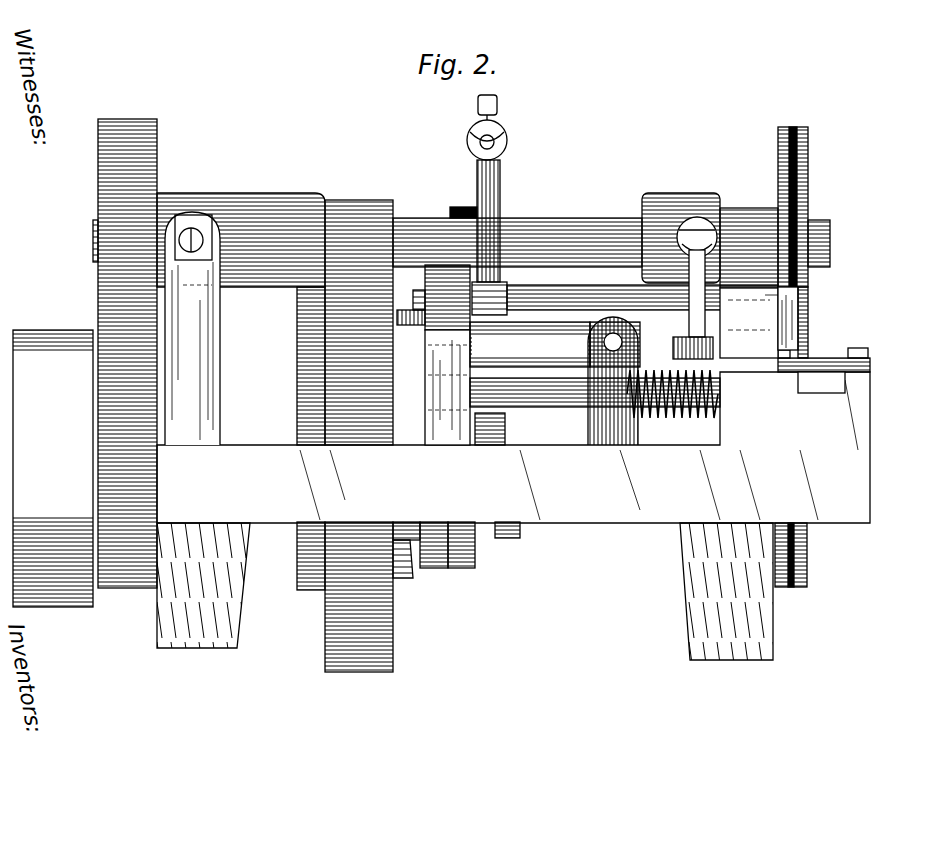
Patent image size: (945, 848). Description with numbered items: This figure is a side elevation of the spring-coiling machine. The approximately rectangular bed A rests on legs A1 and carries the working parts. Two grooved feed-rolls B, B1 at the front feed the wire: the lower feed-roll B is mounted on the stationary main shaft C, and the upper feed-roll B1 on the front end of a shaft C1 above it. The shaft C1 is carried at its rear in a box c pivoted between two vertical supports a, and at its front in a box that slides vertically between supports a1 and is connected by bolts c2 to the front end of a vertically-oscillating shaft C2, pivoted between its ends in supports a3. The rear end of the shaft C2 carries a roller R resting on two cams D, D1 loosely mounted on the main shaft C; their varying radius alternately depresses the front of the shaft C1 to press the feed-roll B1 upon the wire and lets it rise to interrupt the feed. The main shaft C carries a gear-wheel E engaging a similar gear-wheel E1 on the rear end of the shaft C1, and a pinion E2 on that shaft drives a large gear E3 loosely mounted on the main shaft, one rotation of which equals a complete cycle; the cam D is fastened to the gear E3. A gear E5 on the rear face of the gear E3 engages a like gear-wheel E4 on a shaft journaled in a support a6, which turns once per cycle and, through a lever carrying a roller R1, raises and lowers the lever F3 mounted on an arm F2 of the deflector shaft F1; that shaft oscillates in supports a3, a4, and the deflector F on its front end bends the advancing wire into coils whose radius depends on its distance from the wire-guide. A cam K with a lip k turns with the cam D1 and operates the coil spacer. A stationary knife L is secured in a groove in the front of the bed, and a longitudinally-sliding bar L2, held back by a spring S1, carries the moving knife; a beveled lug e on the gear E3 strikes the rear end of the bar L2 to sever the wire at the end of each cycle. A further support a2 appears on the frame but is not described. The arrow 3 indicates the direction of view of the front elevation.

The bed A is at (590, 508).
The legs A1 is at (240, 605).
The lower feed-roll B is at (807, 550).
The upper feed-roll B1 is at (808, 190).
The main shaft C is at (160, 458).
The rear box c is at (236, 210).
The upper feed-roll shaft C1 is at (700, 193).
The bolts c2 is at (695, 268).
The vertically-oscillating shaft C2 is at (594, 344).
The cam D is at (436, 568).
The adjustable cam D1 is at (462, 568).
The gear-wheel E is at (130, 590).
The gear-wheel E1 is at (118, 125).
The pinion E2 is at (360, 210).
The large gear E3 is at (365, 672).
The gear-wheel E4 is at (300, 325).
The gear E5 is at (310, 588).
The beveled lug e is at (402, 578).
The deflector F is at (808, 333).
The deflector shaft F1 is at (544, 290).
The arm F2 is at (500, 198).
The lever F3 is at (507, 136).
The cam K is at (500, 430).
The lip k is at (512, 538).
The stationary knife L is at (828, 385).
The sliding bar L2 is at (572, 393).
The roller R is at (450, 345).
The roller R1 is at (462, 207).
The spring S1 is at (675, 420).
The vertical supports a is at (205, 348).
The supports a1 is at (745, 208).
The lug a2 is at (612, 352).
The supports a3 is at (805, 292).
The support a4 is at (437, 265).
The support a6 is at (408, 310).
The arrow 3 is at (912, 374).